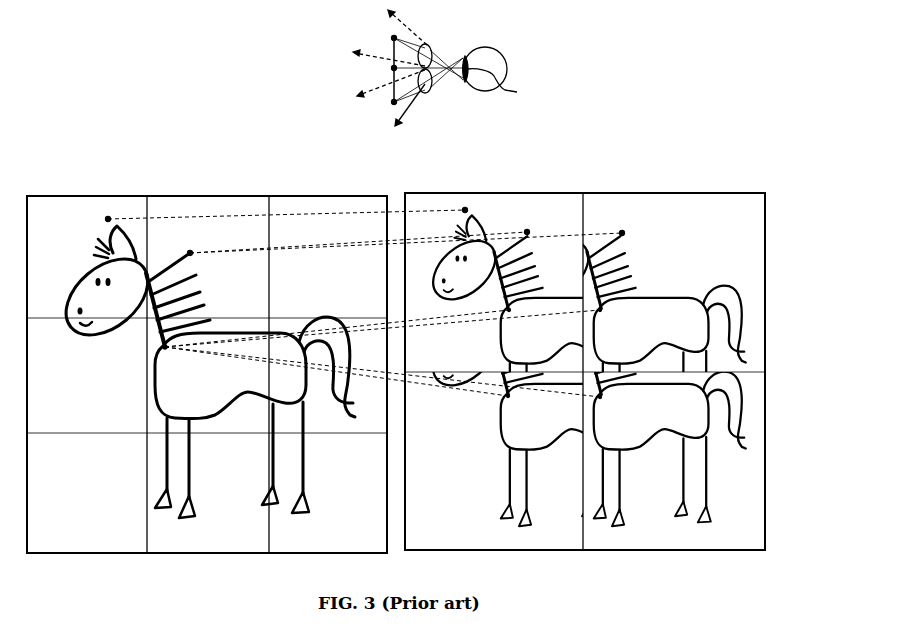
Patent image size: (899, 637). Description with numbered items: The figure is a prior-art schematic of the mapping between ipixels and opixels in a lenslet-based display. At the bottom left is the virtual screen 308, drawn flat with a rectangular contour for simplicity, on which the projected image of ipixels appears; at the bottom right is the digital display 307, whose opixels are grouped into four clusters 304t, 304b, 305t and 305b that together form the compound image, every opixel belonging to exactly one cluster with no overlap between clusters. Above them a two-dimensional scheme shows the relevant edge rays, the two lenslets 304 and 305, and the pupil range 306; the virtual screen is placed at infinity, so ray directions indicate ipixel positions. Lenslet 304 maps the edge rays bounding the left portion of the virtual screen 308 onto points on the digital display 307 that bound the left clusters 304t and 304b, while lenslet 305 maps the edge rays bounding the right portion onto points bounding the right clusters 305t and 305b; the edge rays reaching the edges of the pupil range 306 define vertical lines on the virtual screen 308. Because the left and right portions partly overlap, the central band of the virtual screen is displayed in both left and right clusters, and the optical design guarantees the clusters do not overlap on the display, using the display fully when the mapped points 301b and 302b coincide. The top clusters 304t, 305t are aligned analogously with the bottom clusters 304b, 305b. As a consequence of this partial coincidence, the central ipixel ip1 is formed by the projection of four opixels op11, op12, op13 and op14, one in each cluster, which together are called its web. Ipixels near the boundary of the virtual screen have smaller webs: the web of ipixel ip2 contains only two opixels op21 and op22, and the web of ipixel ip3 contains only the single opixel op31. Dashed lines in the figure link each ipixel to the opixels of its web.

The mapped edge point on digital display 301b is at (357, 73).
The mapped edge point on digital display 302b is at (584, 195).
The lenslet 304 is at (432, 47).
The lenslet 305 is at (432, 92).
The pupil range 306 is at (505, 74).
The digital display 307 is at (694, 186).
The virtual screen 308 is at (122, 189).
The top left cluster 304t is at (517, 207).
The top right cluster 305t is at (630, 327).
The bottom left cluster 304b is at (537, 413).
The bottom right cluster 305b is at (631, 413).
The ipixel ip1 is at (337, 364).
The ipixel ip2 is at (405, 252).
The ipixel ip3 is at (275, 218).
The opixel op11 is at (527, 311).
The opixel op12 is at (619, 311).
The opixel op13 is at (528, 401).
The opixel op14 is at (618, 403).
The opixel op21 is at (543, 227).
The opixel op22 is at (638, 228).
The opixel op31 is at (483, 210).